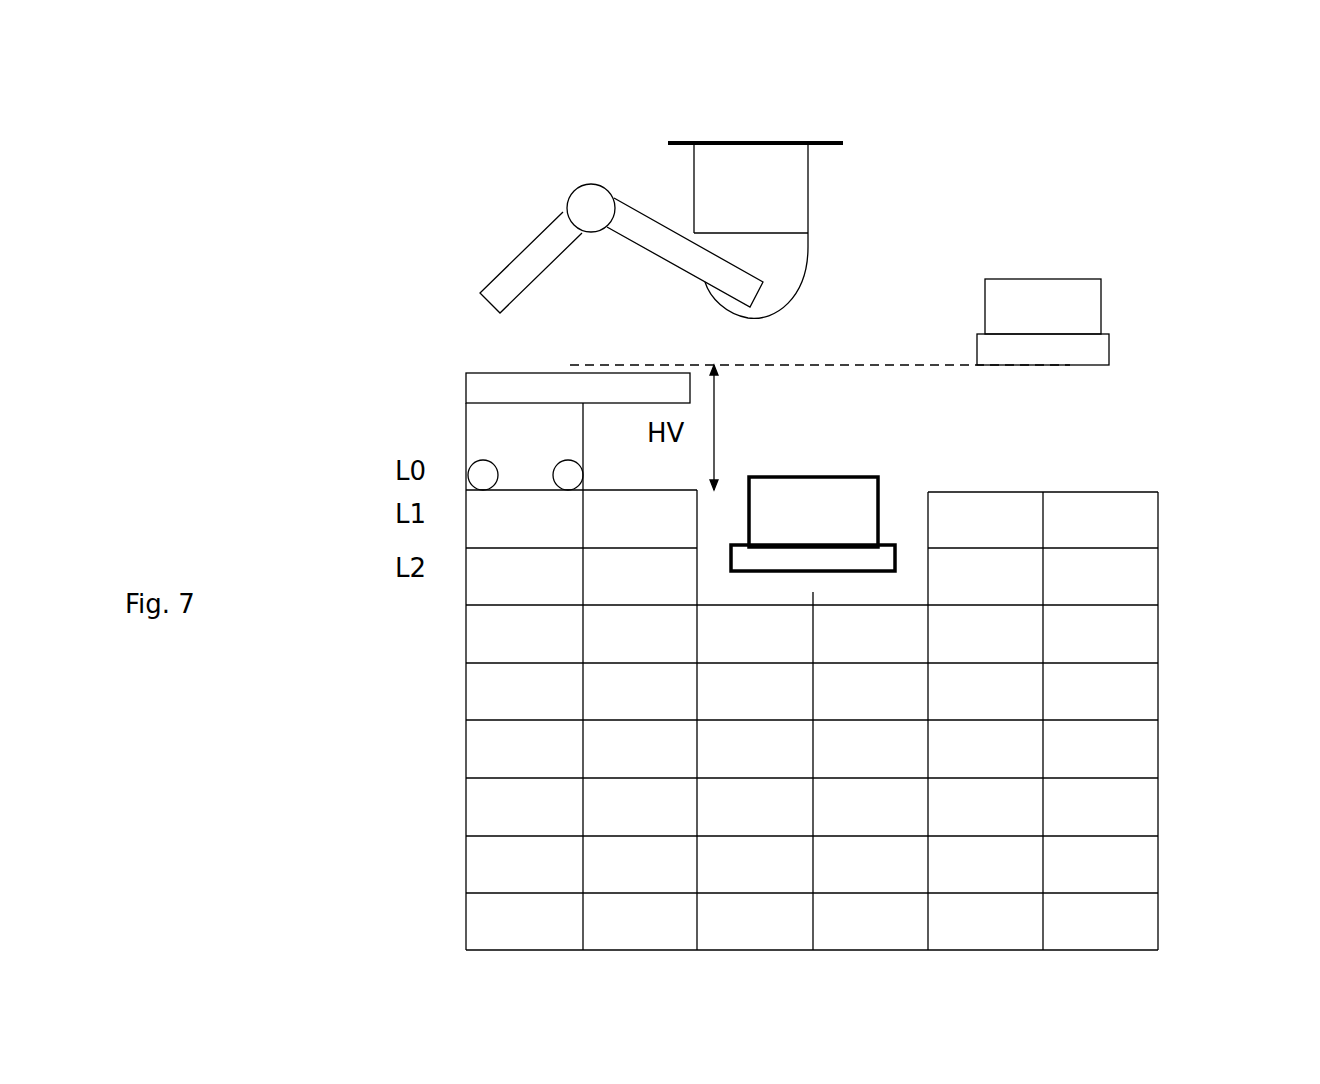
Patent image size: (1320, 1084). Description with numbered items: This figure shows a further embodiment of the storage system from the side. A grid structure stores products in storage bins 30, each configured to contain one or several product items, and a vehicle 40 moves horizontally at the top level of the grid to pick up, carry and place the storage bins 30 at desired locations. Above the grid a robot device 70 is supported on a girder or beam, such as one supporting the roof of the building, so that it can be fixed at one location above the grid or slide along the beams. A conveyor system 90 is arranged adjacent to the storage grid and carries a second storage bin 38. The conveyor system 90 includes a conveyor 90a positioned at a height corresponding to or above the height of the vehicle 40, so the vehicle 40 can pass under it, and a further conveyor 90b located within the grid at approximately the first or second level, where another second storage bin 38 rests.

The robot with gripper 70 is at (893, 137).
The vehicle 40 is at (480, 427).
The storage bin 30 is at (975, 510).
The second storage bin 38 is at (778, 512).
The conveyor system 90 is at (1127, 370).
The conveyor 90a is at (1073, 343).
The conveyor 90b is at (770, 558).